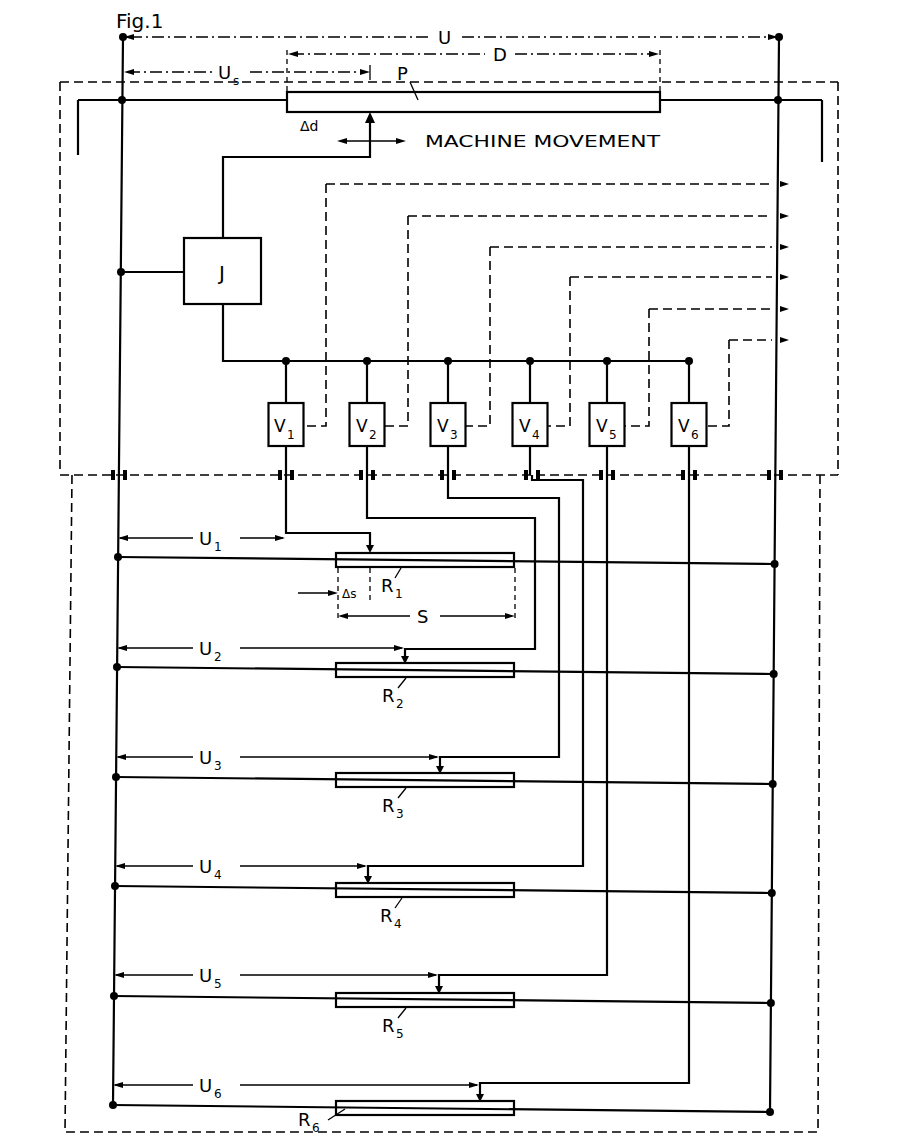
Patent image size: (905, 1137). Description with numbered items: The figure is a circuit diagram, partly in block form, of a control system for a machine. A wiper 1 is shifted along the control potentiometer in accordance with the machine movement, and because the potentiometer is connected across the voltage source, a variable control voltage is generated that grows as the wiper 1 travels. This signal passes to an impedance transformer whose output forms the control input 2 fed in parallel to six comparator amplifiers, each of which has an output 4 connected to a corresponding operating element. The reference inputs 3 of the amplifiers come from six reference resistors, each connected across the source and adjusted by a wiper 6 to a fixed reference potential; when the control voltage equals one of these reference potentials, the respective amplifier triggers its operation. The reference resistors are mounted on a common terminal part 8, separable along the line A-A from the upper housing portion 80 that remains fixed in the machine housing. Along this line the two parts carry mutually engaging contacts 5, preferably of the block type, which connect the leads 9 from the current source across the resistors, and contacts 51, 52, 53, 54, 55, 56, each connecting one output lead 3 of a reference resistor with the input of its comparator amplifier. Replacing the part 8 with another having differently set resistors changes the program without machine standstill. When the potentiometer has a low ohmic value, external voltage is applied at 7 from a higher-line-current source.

The wiper 1 is at (314, 175).
The input 2 is at (222, 360).
The reference inputs 3 is at (290, 514).
The output 4 is at (326, 399).
The contacts 5 is at (125, 473).
The contact 51 is at (291, 473).
The contact 52 is at (372, 473).
The contact 53 is at (453, 473).
The contact 54 is at (537, 473).
The contact 55 is at (612, 473).
The contact 56 is at (694, 473).
The wiper 6 is at (372, 548).
The external voltage 7 is at (80, 135).
The terminal part 8 is at (810, 722).
The leads 9 is at (122, 348).
The upper housing portion 80 is at (58, 482).